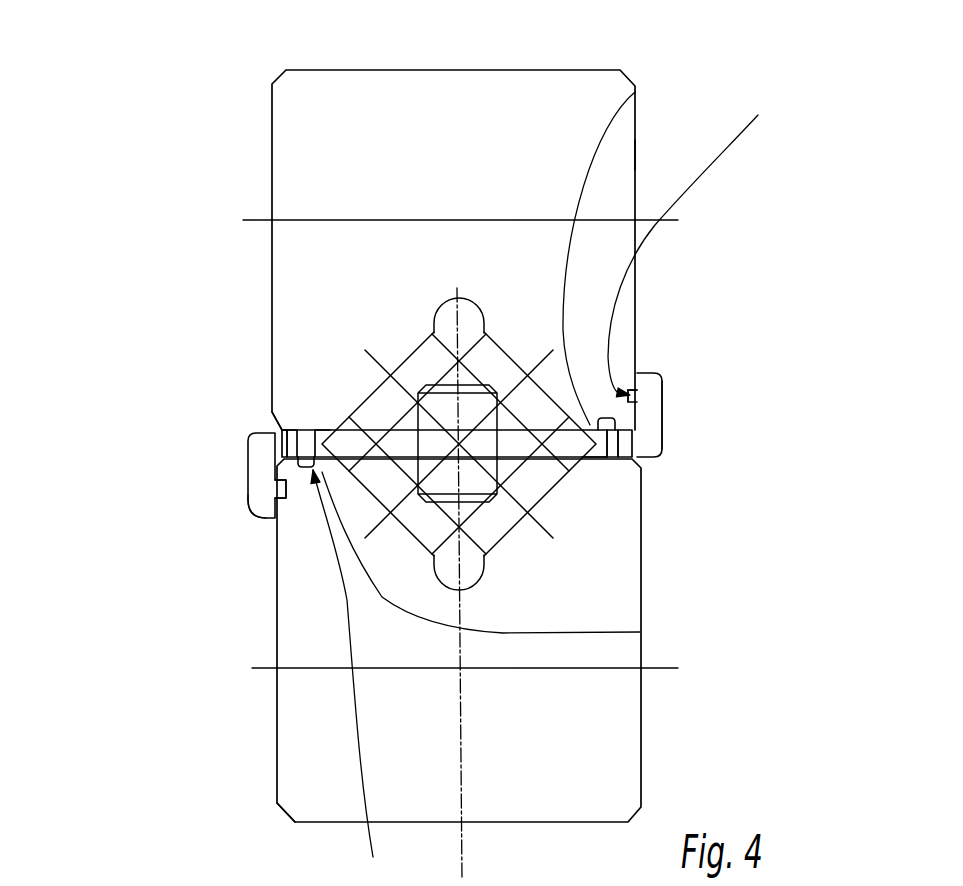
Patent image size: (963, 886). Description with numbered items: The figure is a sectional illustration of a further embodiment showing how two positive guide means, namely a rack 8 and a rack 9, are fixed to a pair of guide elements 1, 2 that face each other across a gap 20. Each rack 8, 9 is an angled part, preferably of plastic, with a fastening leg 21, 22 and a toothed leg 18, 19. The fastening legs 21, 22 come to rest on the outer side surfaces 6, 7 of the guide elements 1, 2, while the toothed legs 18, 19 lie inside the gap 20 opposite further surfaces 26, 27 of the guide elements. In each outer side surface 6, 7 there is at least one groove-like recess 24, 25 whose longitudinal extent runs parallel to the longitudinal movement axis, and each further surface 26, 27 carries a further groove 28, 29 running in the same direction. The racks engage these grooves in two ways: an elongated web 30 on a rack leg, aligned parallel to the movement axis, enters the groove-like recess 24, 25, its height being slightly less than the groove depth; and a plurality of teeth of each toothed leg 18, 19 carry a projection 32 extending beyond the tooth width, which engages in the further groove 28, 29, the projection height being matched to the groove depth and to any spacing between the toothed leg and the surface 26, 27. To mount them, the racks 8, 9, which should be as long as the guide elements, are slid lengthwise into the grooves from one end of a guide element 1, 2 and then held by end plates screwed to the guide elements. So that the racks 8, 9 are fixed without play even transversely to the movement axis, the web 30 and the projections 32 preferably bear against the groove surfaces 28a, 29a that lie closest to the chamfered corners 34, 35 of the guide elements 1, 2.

The guide element 1 is at (600, 55).
The guide element 2 is at (283, 843).
The outer side surface 6 is at (647, 166).
The outer side surface 7 is at (268, 766).
The rack 8 is at (688, 411).
The rack 9 is at (225, 489).
The toothed leg 18 is at (640, 458).
The toothed leg 19 is at (277, 447).
The gap 20 is at (266, 418).
The fastening leg 21 is at (655, 395).
The fastening leg 22 is at (247, 500).
The groove-like recess 24 is at (603, 405).
The groove-like recess 25 is at (296, 492).
The further surface 26 is at (588, 458).
The further surface 27 is at (328, 430).
The further groove 28 is at (700, 239).
The groove surface 28a is at (603, 457).
The further groove 29 is at (640, 632).
The groove surface 29a is at (307, 470).
The elongated web 30 is at (678, 405).
The projection 32 is at (635, 92).
The chamfered corner 34 is at (670, 430).
The chamfered corner 35 is at (286, 430).